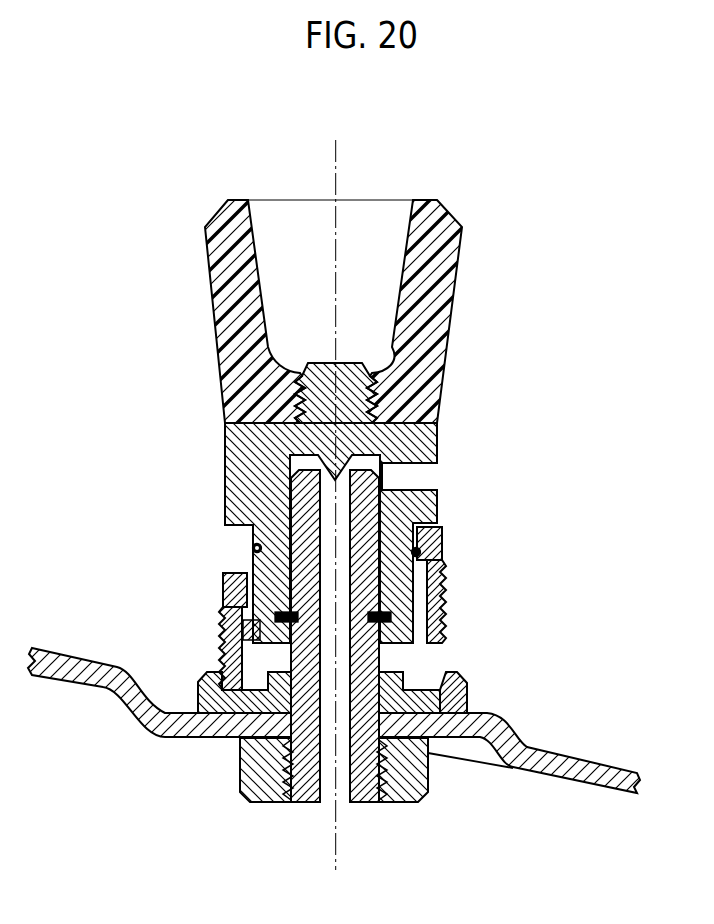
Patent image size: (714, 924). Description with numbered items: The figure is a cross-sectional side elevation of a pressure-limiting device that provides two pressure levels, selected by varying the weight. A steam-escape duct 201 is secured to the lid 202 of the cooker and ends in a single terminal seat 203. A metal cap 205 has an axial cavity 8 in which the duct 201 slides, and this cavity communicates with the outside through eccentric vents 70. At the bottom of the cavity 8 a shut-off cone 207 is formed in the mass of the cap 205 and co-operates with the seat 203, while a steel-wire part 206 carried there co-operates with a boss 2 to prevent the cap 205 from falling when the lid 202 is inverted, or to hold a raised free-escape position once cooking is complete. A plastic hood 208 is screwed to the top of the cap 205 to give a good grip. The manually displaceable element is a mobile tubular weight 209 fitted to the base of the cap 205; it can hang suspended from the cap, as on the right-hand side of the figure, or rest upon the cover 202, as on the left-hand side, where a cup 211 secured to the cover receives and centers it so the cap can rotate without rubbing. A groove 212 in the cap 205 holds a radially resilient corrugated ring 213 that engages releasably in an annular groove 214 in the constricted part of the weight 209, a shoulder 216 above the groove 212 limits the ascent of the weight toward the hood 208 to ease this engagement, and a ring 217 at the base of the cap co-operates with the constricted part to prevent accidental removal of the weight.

The plastic hood 208 is at (433, 301).
The shut-off cone 207 is at (345, 462).
The cap 205 is at (200, 440).
The eccentric vents 70 is at (423, 476).
The shoulder 216 is at (440, 512).
The terminal seat 203 is at (385, 496).
The boss 2 is at (372, 586).
The annular groove 214 is at (222, 593).
The mobile tubular weight 209 is at (220, 650).
The ring 217 is at (234, 631).
The steel-wire part 206 is at (262, 618).
The groove 212 is at (253, 546).
The resilient ring 213 is at (253, 551).
The axial cavity 8 is at (226, 510).
The steam-escape duct 201 is at (382, 658).
The cup 211 is at (443, 702).
The lid 202 is at (612, 777).